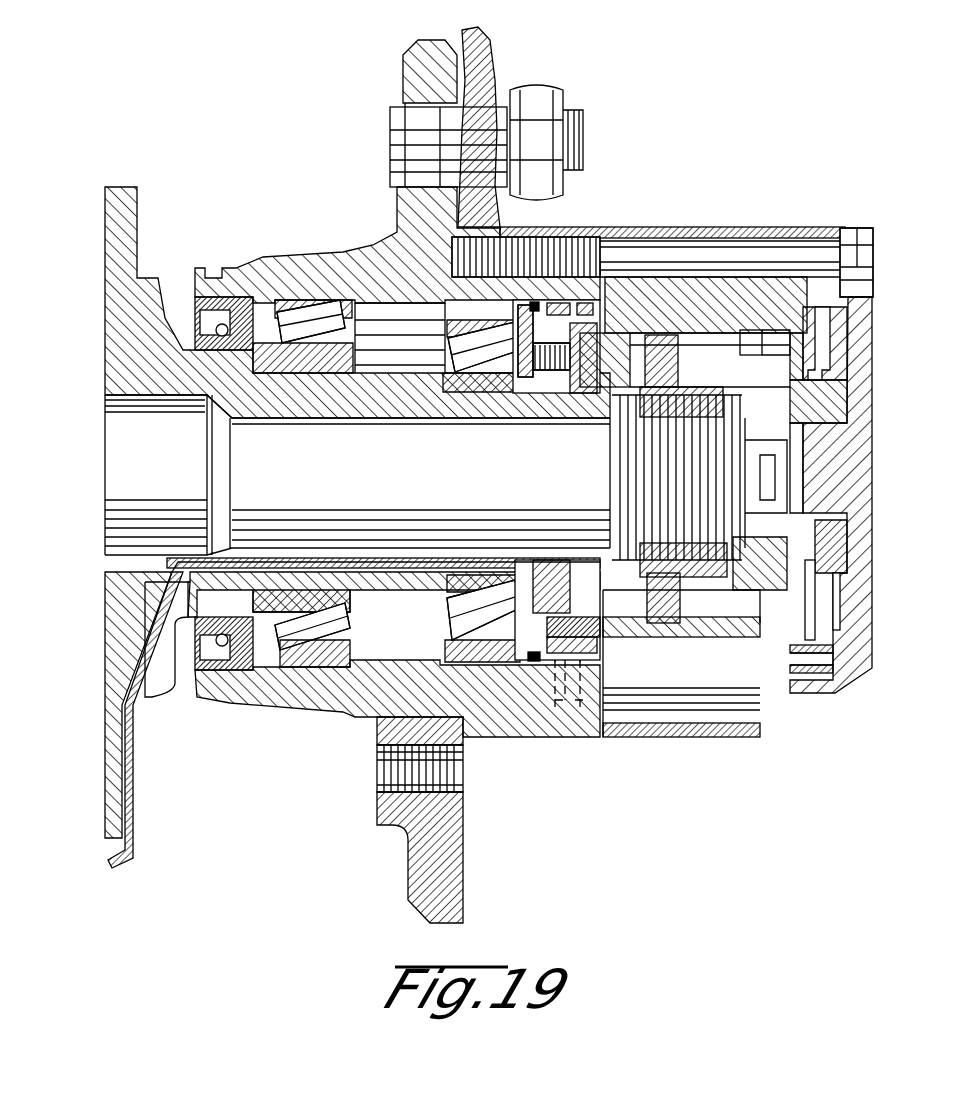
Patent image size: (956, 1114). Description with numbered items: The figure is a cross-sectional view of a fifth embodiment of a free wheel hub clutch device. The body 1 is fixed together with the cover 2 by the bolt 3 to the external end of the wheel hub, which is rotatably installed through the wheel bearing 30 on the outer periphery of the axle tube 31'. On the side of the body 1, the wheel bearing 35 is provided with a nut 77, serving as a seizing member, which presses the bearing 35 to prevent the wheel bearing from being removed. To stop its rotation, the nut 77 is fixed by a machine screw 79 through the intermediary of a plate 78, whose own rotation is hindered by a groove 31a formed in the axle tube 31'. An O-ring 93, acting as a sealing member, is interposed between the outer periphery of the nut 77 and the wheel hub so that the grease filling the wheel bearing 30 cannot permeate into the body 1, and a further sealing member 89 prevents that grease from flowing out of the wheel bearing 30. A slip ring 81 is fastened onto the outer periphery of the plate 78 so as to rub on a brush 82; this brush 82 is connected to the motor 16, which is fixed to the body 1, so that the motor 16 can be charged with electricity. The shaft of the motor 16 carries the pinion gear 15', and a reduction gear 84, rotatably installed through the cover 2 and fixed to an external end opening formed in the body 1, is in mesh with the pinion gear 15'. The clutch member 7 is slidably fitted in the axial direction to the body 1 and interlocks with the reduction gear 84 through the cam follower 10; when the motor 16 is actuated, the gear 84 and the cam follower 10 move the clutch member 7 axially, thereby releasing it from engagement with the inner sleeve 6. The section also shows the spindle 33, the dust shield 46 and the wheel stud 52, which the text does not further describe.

The body 1 is at (745, 712).
The cover 2 is at (855, 690).
The bolt 3 is at (858, 233).
The inner sleeve 6 is at (690, 382).
The clutch member 7 is at (752, 342).
The cam follower 10 is at (760, 632).
The pinion gear 15' is at (822, 687).
The motor 16 is at (655, 690).
The wheel bearing 30 is at (308, 320).
The axle tube 31' is at (357, 476).
The groove 31a is at (410, 265).
The spindle 33 is at (283, 450).
The wheel bearing 35 is at (540, 240).
The dust shield 46 is at (125, 790).
The wheel stud 52 is at (410, 55).
The nut 77 is at (535, 660).
The plate 78 is at (660, 345).
The machine screw 79 is at (690, 385).
The slip ring 81 is at (565, 315).
The brush 82 is at (581, 712).
The reduction gear 84 is at (800, 680).
The sealing member 89 is at (207, 297).
The O-ring 93 is at (540, 300).